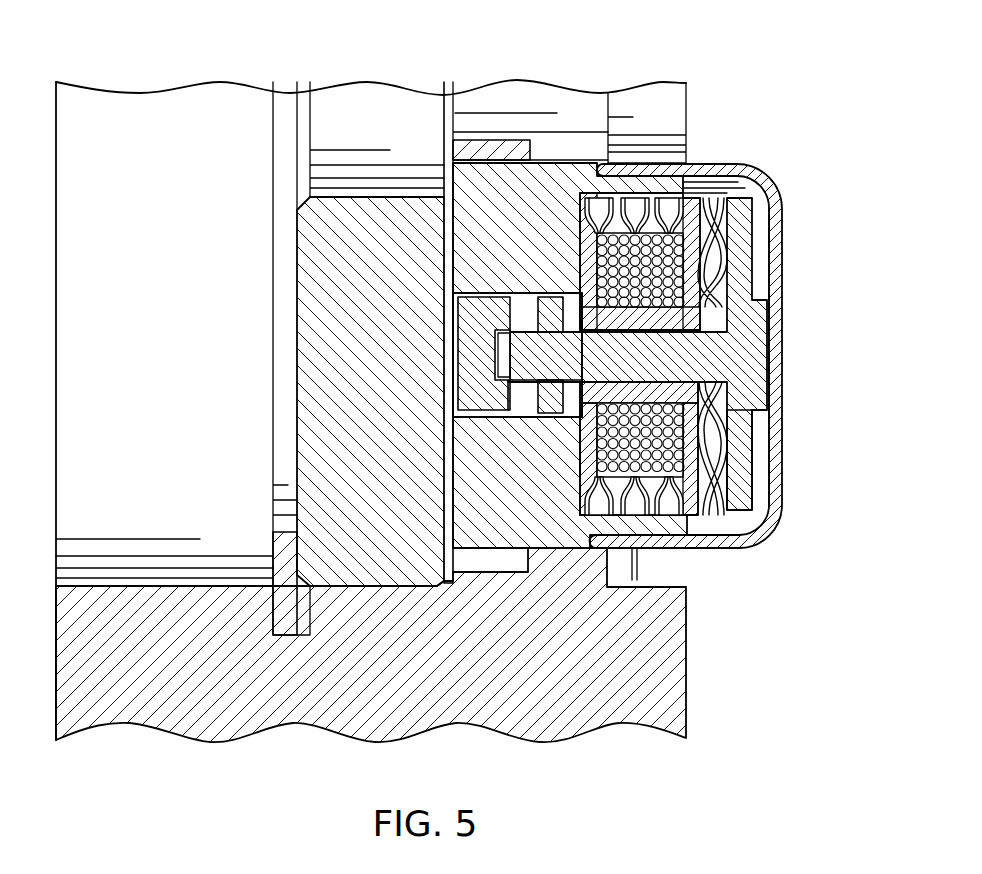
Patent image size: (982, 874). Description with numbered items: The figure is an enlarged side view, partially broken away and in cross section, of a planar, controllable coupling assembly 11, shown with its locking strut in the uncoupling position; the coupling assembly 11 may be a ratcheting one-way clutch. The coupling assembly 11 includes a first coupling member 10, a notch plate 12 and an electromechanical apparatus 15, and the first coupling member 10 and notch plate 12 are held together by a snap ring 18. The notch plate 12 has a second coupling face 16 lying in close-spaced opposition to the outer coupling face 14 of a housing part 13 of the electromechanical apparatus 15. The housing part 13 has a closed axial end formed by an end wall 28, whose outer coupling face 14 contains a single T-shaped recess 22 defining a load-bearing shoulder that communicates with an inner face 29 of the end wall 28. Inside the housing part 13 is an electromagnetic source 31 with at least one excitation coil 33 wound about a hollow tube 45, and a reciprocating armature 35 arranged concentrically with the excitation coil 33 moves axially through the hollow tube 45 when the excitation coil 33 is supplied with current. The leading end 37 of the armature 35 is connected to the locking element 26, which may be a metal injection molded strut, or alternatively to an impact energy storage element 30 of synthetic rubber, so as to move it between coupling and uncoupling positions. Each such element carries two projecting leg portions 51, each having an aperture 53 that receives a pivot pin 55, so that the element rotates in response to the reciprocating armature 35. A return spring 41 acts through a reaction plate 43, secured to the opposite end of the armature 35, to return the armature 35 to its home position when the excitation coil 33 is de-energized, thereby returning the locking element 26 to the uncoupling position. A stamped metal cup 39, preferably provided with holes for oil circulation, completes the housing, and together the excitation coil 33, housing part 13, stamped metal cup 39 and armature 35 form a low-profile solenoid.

The first coupling member 10 is at (690, 695).
The controllable coupling assembly 11 is at (653, 56).
The notch plate 12 is at (295, 258).
The housing part 13 is at (492, 158).
The outer coupling face 14 is at (458, 485).
The electromechanical apparatus 15 is at (735, 160).
The second coupling face 16 is at (443, 357).
The snap ring 18 is at (283, 548).
The T-shaped recess 22 is at (468, 302).
The locking element 26 is at (449, 318).
The end wall 28 is at (453, 205).
The inner face 29 is at (586, 256).
The impact energy storage element 30 is at (480, 428).
The electromagnetic source 31 is at (688, 221).
The excitation coil 33 is at (688, 277).
The reciprocating armature 35 is at (772, 356).
The leading end 37 is at (488, 401).
The stamped metal cup 39 is at (783, 242).
The return spring 41 is at (712, 506).
The reaction plate 43 is at (752, 462).
The hollow tube 45 is at (700, 428).
The projecting leg portions 51 is at (552, 396).
The aperture 53 is at (535, 316).
The pivot pin 55 is at (520, 336).